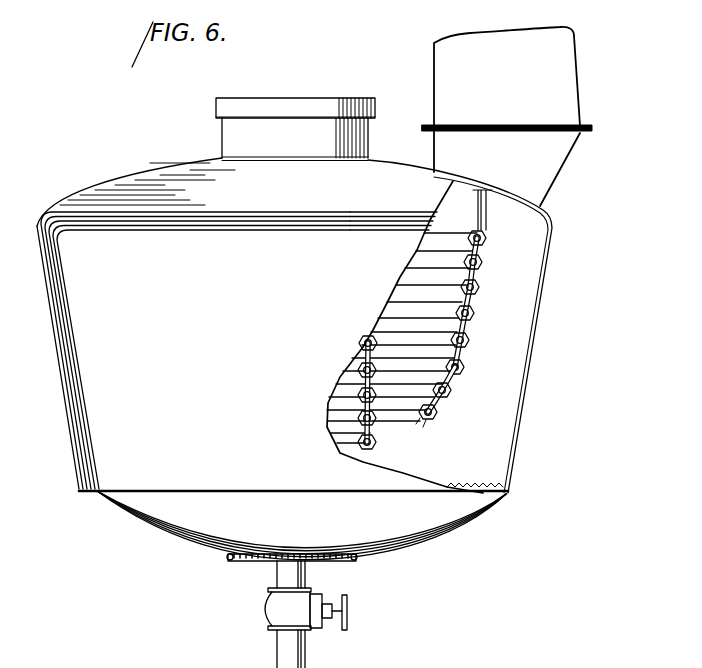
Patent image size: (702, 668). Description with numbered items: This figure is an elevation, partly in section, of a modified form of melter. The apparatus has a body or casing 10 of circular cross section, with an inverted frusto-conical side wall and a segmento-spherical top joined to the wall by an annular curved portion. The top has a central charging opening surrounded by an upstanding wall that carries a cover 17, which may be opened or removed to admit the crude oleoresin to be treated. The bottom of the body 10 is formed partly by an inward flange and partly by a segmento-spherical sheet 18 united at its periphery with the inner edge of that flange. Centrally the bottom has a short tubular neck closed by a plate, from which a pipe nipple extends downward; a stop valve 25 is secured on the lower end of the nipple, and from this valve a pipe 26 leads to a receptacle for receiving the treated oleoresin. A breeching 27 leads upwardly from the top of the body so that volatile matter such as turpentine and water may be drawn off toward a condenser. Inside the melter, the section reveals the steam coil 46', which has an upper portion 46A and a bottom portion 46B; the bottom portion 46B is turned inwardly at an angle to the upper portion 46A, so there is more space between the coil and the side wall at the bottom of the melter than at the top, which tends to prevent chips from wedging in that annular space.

The body or casing 10 is at (544, 295).
The cover 17 is at (338, 97).
The segmento-spherical sheet 18 is at (404, 537).
The stop valve 25 is at (278, 609).
The pipe 26 is at (280, 652).
The breeching 27 is at (556, 162).
The coil 46' is at (487, 282).
The upper portion 46A is at (469, 326).
The bottom portion 46B is at (446, 392).